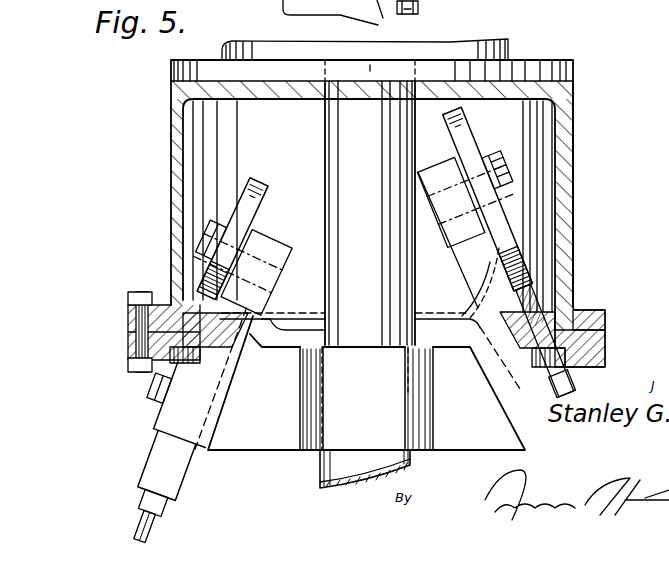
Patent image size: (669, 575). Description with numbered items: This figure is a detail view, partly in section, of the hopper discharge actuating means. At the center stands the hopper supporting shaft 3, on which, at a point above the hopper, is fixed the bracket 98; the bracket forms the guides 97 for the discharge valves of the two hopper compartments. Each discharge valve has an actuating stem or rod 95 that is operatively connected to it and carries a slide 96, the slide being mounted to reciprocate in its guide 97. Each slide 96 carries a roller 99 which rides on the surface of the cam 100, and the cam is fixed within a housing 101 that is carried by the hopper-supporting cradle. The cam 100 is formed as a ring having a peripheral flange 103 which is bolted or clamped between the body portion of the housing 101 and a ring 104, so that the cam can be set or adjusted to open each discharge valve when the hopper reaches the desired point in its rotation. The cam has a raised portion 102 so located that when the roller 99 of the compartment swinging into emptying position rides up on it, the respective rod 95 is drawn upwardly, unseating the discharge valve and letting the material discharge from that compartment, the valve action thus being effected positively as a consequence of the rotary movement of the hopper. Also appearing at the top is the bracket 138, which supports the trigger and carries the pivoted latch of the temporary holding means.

The hopper supporting shaft 3 is at (331, 137).
The actuating stem or rod 95 is at (140, 520).
The slide 96 is at (158, 463).
The guide 97 is at (210, 394).
The bracket 98 is at (442, 449).
The roller 99 is at (248, 212).
The cam 100 is at (275, 308).
The housing 101 is at (566, 236).
The raised portion 102 is at (516, 243).
The peripheral flange 103 is at (575, 328).
The ring 104 is at (605, 348).
The bracket 138 is at (351, 18).